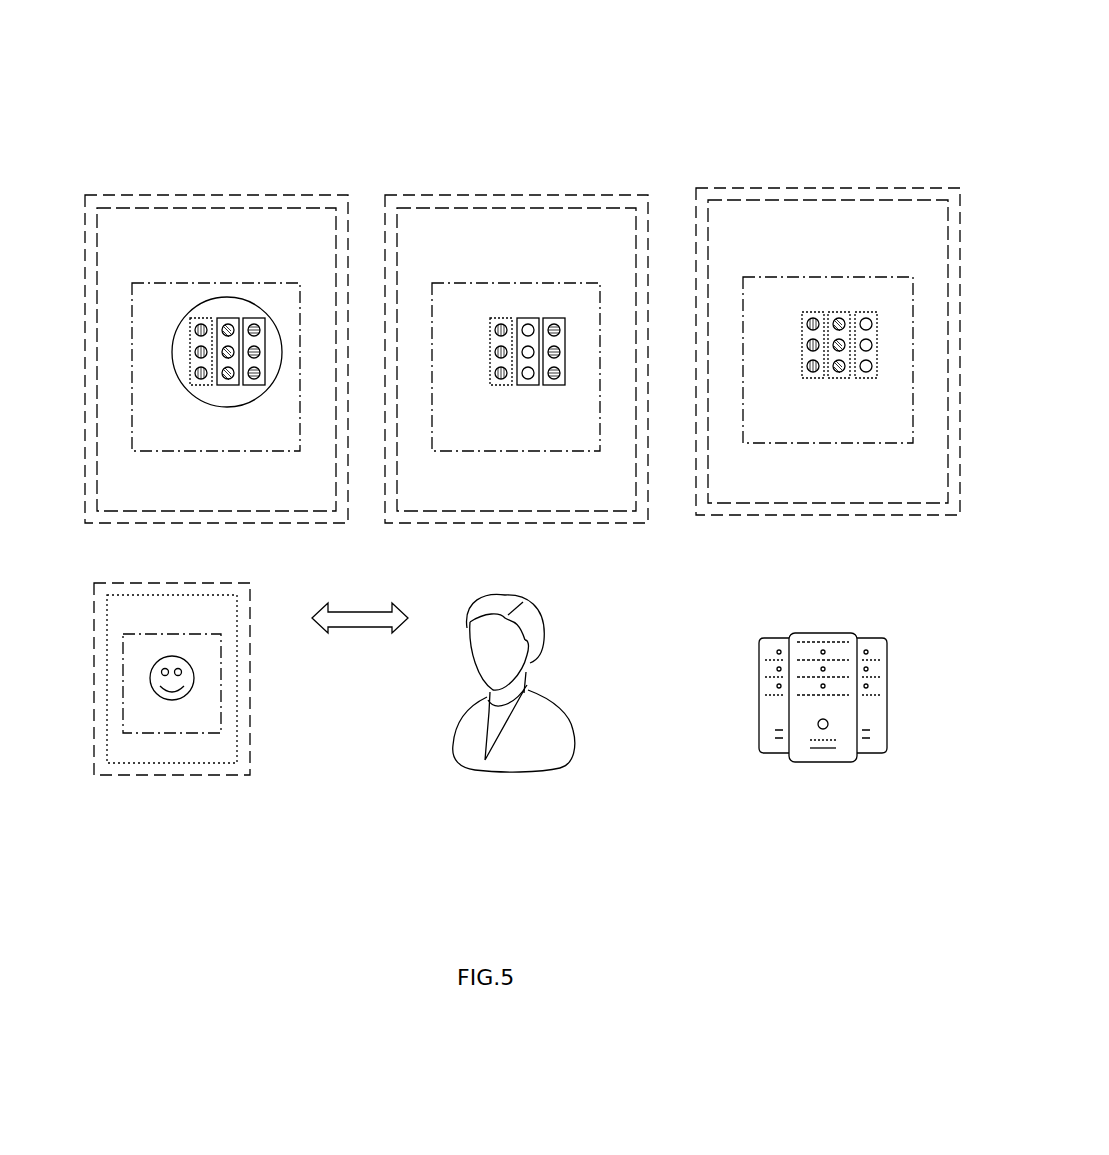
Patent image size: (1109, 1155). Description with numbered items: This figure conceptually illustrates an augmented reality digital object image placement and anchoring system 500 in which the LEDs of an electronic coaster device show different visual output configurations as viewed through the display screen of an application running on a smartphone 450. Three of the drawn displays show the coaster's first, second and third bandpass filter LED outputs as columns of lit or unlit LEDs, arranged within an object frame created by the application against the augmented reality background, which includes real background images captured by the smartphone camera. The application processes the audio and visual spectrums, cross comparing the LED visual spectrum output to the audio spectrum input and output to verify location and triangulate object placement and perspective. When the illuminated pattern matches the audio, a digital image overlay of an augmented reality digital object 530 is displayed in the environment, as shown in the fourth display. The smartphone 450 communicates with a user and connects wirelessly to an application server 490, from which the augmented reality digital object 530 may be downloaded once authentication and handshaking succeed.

The augmented reality digital object image placement and anchoring system 500 is at (815, 60).
The augmented reality digital object 530 is at (190, 665).
The smartphone 450 is at (868, 635).
The application server 490 is at (759, 653).